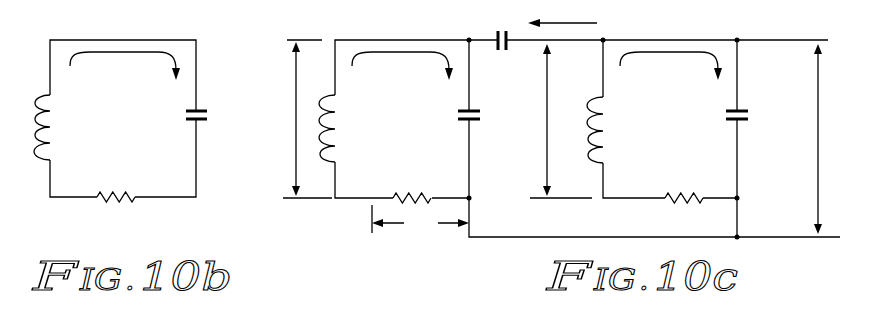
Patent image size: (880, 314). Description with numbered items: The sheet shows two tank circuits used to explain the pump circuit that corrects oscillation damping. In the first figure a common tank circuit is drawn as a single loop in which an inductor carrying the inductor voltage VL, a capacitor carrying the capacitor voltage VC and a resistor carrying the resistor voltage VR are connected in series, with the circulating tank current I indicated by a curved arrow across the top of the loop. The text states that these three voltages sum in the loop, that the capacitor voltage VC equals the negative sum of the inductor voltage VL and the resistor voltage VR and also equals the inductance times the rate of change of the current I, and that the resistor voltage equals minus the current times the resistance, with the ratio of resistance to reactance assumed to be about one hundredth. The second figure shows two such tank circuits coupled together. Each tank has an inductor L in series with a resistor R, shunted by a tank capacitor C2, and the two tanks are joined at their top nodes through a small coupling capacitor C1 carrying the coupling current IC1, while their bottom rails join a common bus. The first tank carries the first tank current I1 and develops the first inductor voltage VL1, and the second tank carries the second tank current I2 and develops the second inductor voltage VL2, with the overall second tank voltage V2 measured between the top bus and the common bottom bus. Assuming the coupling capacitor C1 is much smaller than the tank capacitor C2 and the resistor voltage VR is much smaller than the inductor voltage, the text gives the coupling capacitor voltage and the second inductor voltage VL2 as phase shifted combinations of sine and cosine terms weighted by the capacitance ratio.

In FIG. 10b, the inductor voltage VL is at (29, 127).
In FIG. 10b, the capacitor voltage VC is at (208, 117).
In FIG. 10b, the resistor voltage VR is at (116, 214).
In FIG. 10c, the resistor voltage VR is at (420, 221).
In FIG. 10b, the tank current I is at (125, 66).
In FIG. 10c, the coupling capacitor C1 is at (498, 28).
In FIG. 10c, the coupling capacitor current IC1 is at (562, 14).
In FIG. 10c, the inductor L is at (454, 129).
In FIG. 10c, the first inductor voltage VL1 is at (307, 119).
In FIG. 10c, the second inductor voltage VL2 is at (561, 121).
In FIG. 10c, the second tank voltage V2 is at (817, 139).
In FIG. 10c, the tank capacitor C2 is at (615, 118).
In FIG. 10c, the resistor R is at (548, 188).
In FIG. 10c, the first tank current I1 is at (402, 66).
In FIG. 10c, the second tank current I2 is at (671, 66).